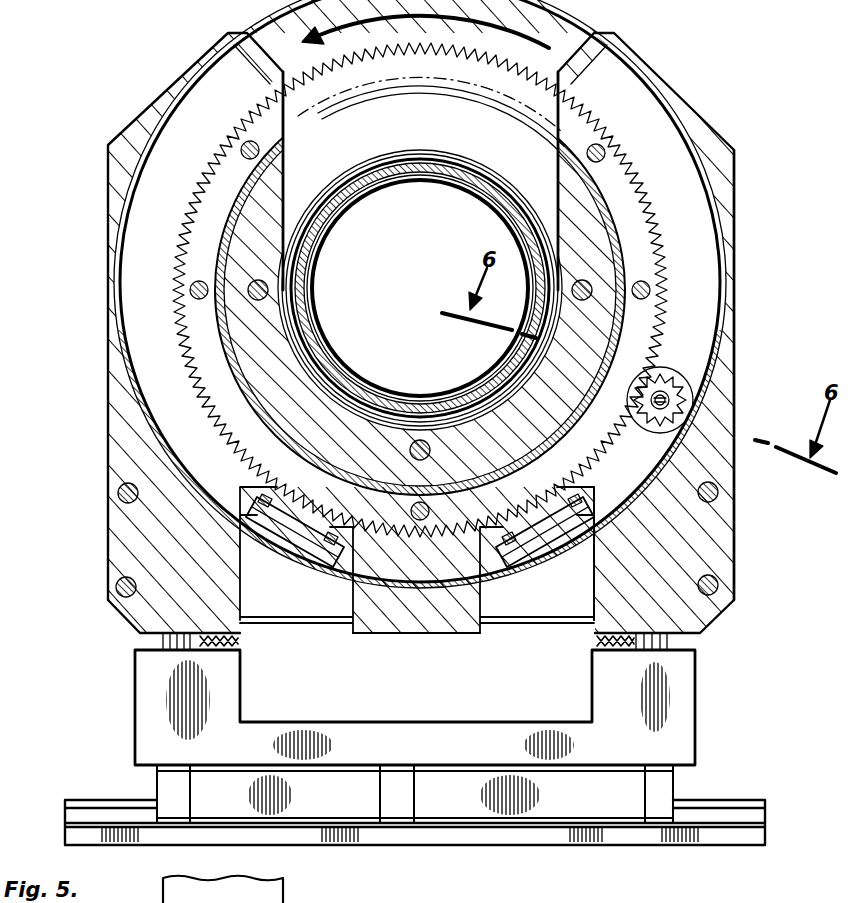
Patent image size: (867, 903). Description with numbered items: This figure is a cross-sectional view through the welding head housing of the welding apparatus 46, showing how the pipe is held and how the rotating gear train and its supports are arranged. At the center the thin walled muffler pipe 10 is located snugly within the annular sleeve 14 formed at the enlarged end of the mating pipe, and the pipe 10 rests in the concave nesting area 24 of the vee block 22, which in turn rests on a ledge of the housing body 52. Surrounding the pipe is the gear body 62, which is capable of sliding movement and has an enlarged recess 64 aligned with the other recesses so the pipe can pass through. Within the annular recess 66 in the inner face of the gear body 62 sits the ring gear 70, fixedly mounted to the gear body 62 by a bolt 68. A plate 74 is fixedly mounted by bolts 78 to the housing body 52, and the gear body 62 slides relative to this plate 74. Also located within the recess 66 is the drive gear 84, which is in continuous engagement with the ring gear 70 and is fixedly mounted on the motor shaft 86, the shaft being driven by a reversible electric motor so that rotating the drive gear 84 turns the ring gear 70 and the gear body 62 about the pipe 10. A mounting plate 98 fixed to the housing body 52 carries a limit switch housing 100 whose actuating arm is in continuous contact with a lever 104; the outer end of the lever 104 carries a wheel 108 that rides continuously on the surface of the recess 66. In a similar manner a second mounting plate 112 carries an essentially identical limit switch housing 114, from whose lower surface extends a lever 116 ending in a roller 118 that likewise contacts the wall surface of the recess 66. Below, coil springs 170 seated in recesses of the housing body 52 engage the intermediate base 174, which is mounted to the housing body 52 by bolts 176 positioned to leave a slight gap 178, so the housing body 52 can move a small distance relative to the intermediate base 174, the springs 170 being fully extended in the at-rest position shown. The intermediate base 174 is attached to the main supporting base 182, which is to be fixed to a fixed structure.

The muffler pipe 10 is at (456, 166).
The annular sleeve 14 is at (434, 162).
The vee block 22 is at (500, 396).
The concave nesting area 24 is at (452, 418).
The welding apparatus 46 is at (152, 97).
The housing body 52 is at (600, 240).
The gear body 62 is at (202, 60).
The enlarged recess 64 is at (285, 172).
The annular recess 66 is at (706, 285).
The bolt 68 is at (240, 150).
The ring gear 70 is at (190, 320).
The plate 74 is at (292, 330).
The bolts 78 is at (270, 292).
The drive gear 84 is at (690, 394).
The motor shaft 86 is at (670, 402).
The mounting plate 98 is at (611, 547).
The limit switch housing 100 is at (523, 550).
The lever 104 is at (553, 568).
The wheel 108 is at (600, 515).
The mounting plate 112 is at (238, 528).
The limit switch housing 114 is at (285, 570).
The lever 116 is at (303, 560).
The roller 118 is at (185, 465).
The coil spring 170 is at (212, 650).
The intermediate base 174 is at (385, 745).
The bolts 176 is at (170, 650).
The gap 178 is at (150, 640).
The main supporting base 182 is at (470, 838).